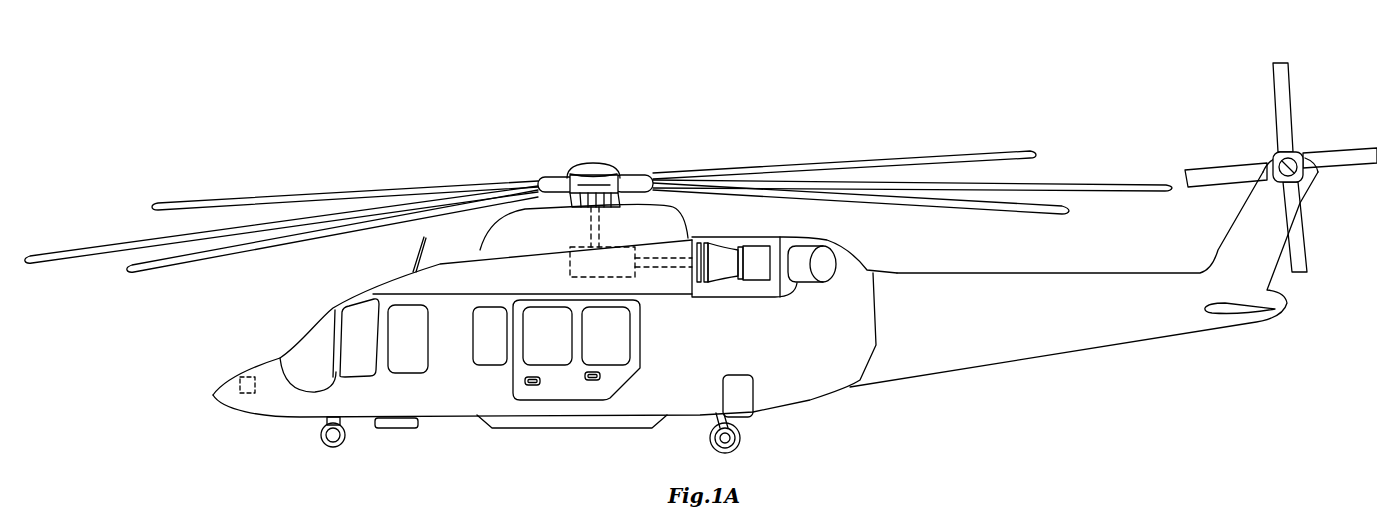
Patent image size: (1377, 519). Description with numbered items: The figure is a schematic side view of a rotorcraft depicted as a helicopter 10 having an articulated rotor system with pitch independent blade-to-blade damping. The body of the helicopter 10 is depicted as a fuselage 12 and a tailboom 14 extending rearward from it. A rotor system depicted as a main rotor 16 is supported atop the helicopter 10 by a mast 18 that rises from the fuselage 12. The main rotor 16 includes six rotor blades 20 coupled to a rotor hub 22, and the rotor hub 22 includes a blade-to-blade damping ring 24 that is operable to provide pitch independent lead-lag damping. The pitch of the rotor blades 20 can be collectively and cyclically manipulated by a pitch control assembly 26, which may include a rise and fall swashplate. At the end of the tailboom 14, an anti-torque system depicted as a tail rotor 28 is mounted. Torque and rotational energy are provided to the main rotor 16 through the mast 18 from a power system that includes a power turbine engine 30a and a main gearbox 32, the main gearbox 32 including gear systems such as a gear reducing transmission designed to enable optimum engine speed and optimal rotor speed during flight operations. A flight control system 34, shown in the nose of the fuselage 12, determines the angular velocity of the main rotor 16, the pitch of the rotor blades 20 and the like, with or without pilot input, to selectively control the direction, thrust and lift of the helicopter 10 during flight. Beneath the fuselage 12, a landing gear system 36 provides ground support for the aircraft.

The helicopter 10 is at (509, 143).
The fuselage 12 is at (430, 405).
The tailboom 14 is at (1108, 347).
The main rotor 16 is at (948, 146).
The mast 18 is at (590, 228).
The rotor blades 20 is at (1013, 210).
The rotor hub 22 is at (641, 172).
The blade-to-blade damping ring 24 is at (594, 178).
The pitch control assembly 26 is at (627, 193).
The tail rotor 28 is at (1222, 168).
The engine 30a is at (752, 280).
The main gearbox 32 is at (568, 258).
The flight control system 34 is at (243, 368).
The landing gear system 36 is at (740, 445).